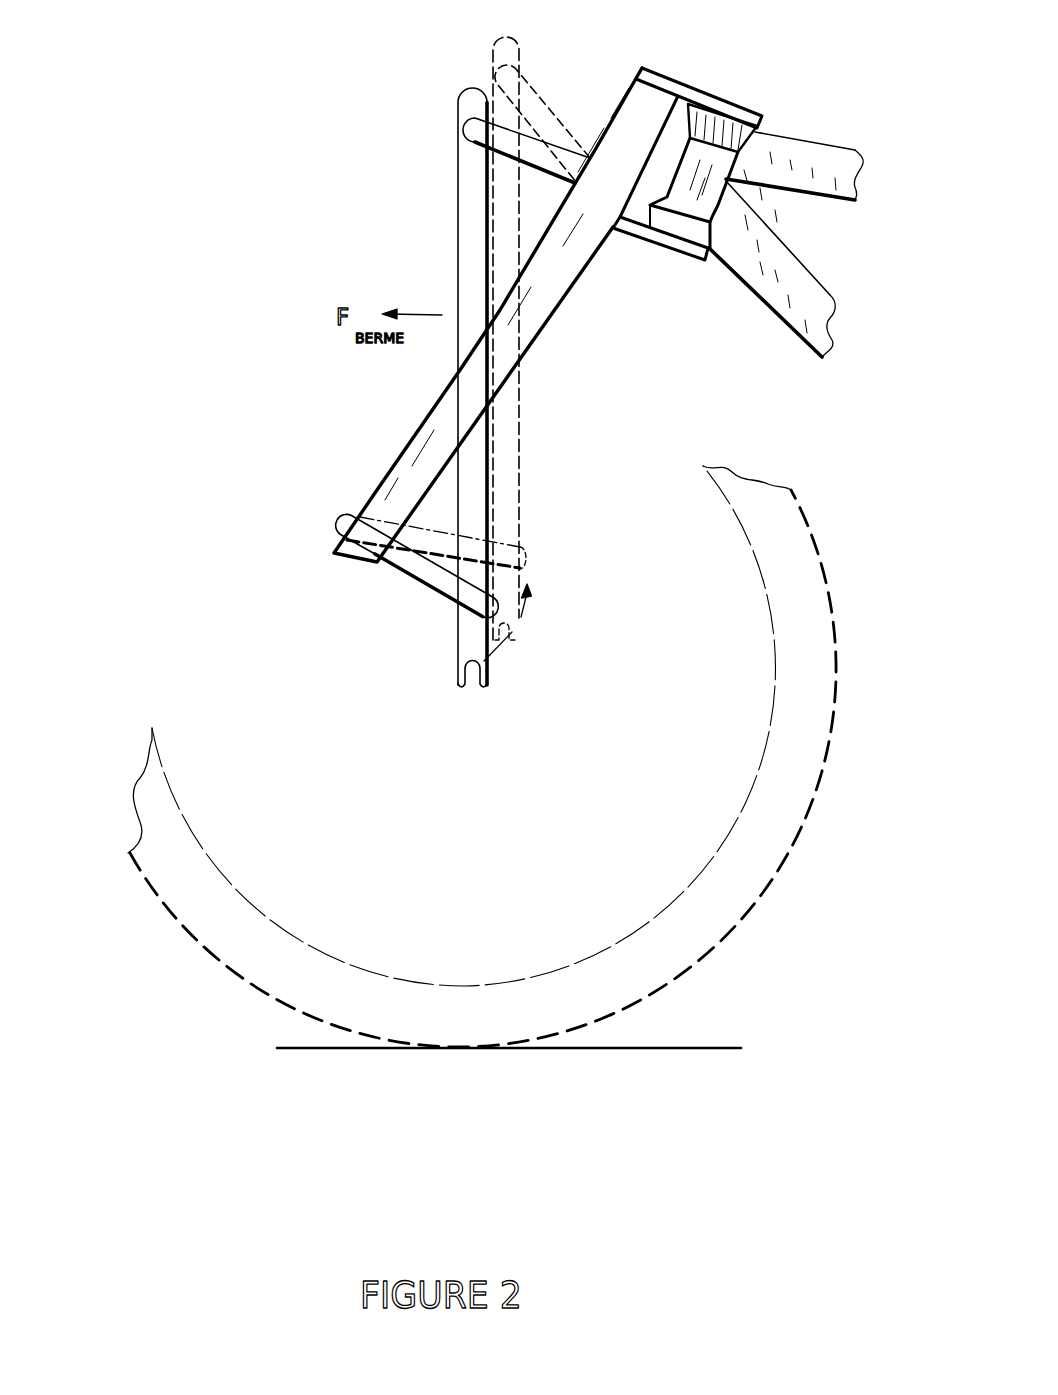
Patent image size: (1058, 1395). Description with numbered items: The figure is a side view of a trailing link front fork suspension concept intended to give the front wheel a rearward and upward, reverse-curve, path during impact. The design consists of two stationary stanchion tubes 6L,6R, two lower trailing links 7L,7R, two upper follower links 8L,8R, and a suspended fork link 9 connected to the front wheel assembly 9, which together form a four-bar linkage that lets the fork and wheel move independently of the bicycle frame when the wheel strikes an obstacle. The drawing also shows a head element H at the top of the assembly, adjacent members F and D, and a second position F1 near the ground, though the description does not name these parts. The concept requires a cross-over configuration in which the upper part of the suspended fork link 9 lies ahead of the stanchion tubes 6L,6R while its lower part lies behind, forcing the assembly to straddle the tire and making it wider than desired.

The suspended fork link 9 is at (482, 448).
The stationary stanchion tubes 6L,6R is at (525, 316).
The upper follower links 8L,8R is at (540, 135).
The lower trailing links 7L,7R is at (403, 572).
The holder / hub H is at (700, 150).
The vehicle frame F is at (798, 164).
The drawbar D is at (780, 283).
The vehicle frame (second position) F1 is at (555, 1042).